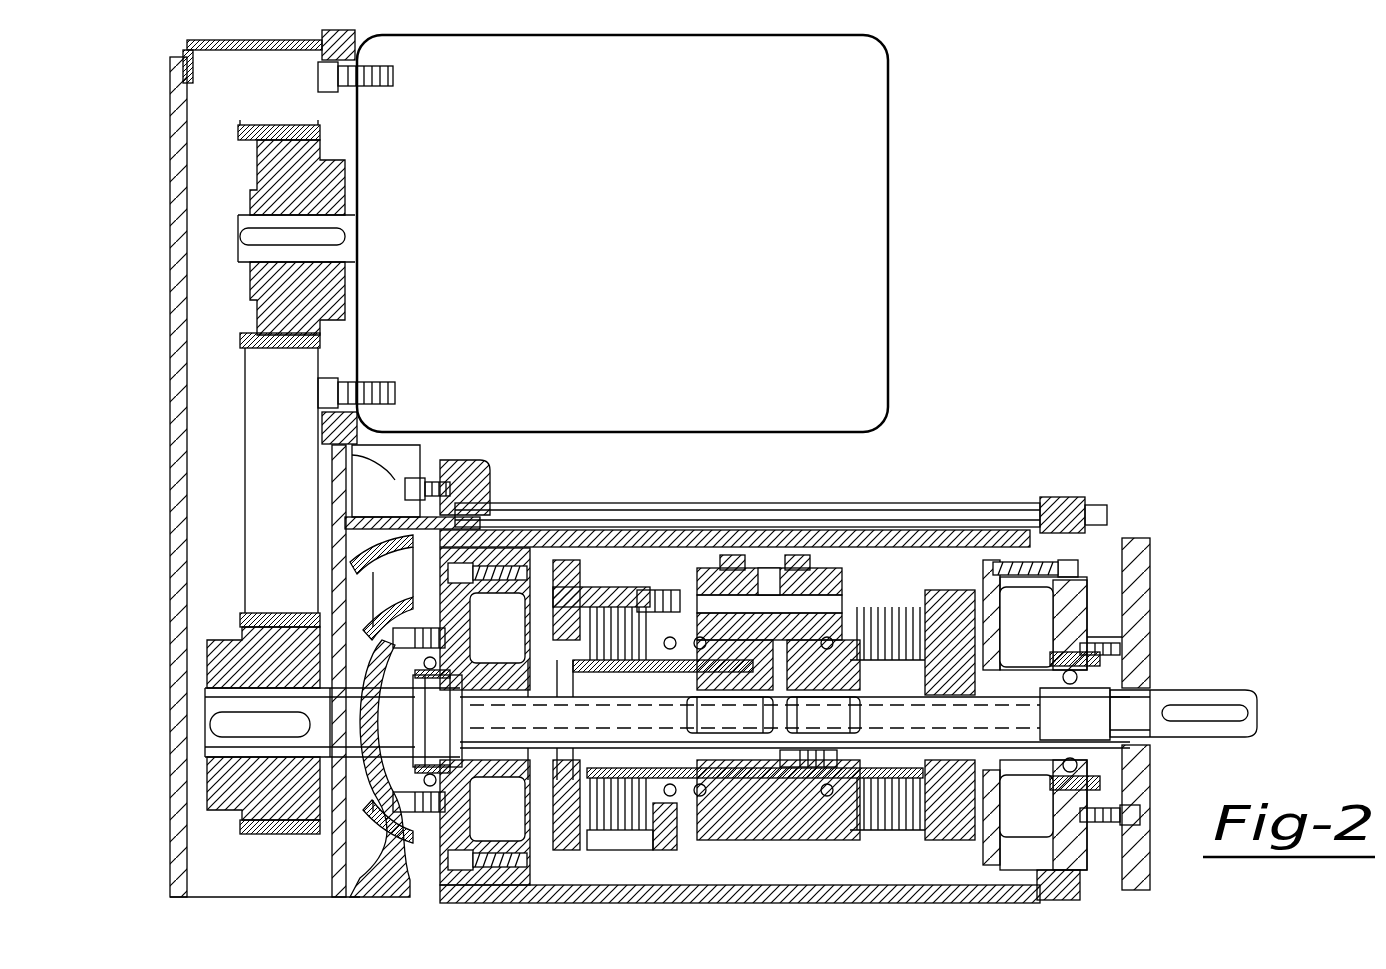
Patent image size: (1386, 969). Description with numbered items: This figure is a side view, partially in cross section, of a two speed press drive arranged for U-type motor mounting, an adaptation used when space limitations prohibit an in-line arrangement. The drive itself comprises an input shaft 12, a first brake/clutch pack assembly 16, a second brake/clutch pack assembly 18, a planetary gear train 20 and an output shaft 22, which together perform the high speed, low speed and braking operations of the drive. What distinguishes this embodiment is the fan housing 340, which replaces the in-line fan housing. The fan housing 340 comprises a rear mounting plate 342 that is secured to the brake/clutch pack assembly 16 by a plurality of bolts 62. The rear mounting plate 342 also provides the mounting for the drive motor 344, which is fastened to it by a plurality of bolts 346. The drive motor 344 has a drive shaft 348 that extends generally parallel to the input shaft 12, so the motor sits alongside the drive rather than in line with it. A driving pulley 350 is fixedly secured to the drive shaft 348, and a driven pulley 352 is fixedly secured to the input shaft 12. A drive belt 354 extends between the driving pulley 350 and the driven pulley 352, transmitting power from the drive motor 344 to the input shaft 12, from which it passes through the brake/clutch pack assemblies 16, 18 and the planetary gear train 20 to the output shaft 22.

The input shaft 12 is at (397, 740).
The brake/clutch pack assembly 16 is at (638, 575).
The brake/clutch pack assembly 18 is at (918, 588).
The planetary gear train 20 is at (768, 558).
The output shaft 22 is at (1205, 698).
The bolts 62 is at (490, 468).
The fan housing 340 is at (180, 390).
The rear mounting plate 342 is at (400, 458).
The drive motor 344 is at (730, 158).
The bolts 346 is at (393, 78).
The drive shaft 348 is at (250, 254).
The driving pulley 350 is at (245, 318).
The driven pulley 352 is at (245, 820).
The drive belt 354 is at (262, 472).